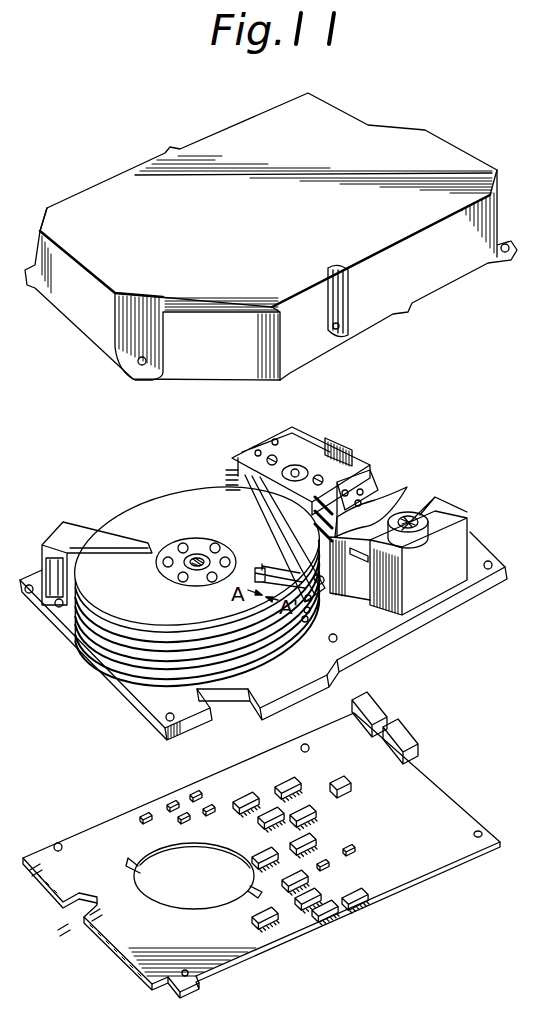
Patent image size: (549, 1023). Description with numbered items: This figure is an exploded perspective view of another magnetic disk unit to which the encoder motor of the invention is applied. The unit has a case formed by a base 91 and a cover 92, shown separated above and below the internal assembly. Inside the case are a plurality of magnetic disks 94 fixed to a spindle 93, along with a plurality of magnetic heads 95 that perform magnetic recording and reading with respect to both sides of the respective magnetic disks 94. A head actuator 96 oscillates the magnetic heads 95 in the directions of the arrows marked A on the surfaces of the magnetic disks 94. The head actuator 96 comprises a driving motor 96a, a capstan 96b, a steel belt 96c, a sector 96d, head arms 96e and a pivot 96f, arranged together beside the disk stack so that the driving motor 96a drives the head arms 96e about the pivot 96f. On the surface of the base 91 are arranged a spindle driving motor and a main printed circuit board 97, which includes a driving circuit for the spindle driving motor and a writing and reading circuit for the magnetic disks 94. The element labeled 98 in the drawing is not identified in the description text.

The base 91 is at (120, 702).
The cover 92 is at (97, 347).
The spindle 93 is at (163, 553).
The magnetic disks 94 is at (174, 490).
The magnetic heads 95 is at (262, 573).
The head actuator 96 is at (353, 541).
The driving motor 96a is at (437, 557).
The capstan 96b is at (408, 538).
The steel belt 96c is at (355, 538).
The sector 96d is at (375, 479).
The head arms 96e is at (258, 508).
The pivot 96f is at (297, 468).
The main printed circuit board 97 is at (365, 905).
The magnetic head 98 is at (272, 568).